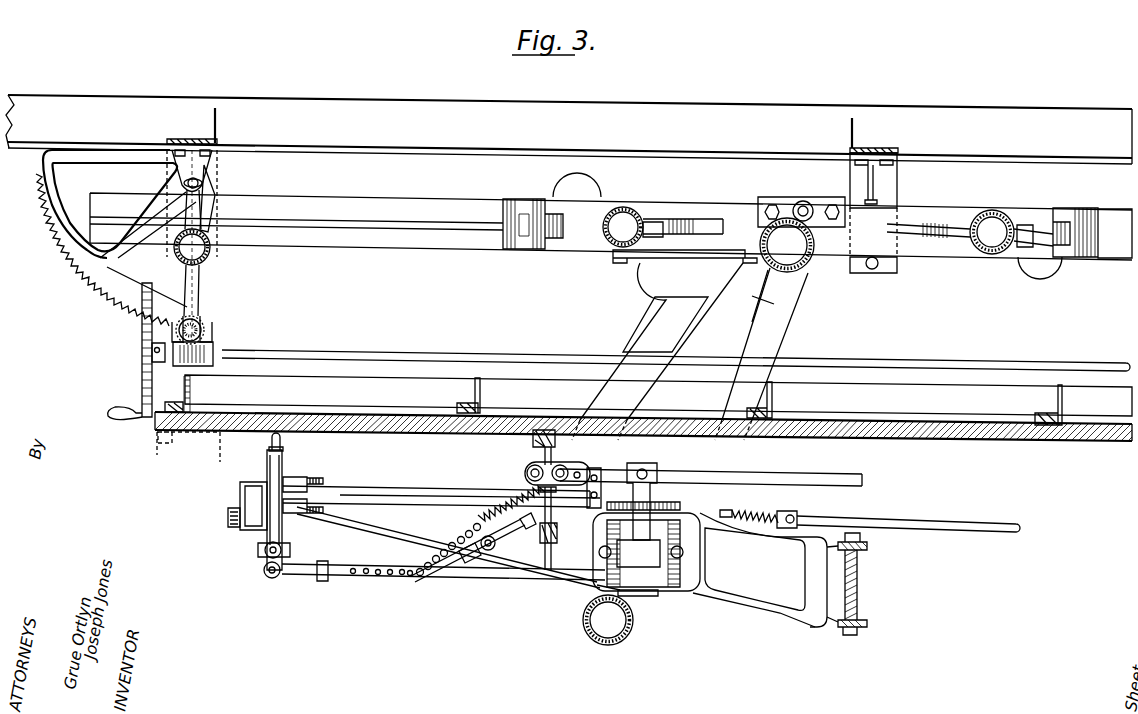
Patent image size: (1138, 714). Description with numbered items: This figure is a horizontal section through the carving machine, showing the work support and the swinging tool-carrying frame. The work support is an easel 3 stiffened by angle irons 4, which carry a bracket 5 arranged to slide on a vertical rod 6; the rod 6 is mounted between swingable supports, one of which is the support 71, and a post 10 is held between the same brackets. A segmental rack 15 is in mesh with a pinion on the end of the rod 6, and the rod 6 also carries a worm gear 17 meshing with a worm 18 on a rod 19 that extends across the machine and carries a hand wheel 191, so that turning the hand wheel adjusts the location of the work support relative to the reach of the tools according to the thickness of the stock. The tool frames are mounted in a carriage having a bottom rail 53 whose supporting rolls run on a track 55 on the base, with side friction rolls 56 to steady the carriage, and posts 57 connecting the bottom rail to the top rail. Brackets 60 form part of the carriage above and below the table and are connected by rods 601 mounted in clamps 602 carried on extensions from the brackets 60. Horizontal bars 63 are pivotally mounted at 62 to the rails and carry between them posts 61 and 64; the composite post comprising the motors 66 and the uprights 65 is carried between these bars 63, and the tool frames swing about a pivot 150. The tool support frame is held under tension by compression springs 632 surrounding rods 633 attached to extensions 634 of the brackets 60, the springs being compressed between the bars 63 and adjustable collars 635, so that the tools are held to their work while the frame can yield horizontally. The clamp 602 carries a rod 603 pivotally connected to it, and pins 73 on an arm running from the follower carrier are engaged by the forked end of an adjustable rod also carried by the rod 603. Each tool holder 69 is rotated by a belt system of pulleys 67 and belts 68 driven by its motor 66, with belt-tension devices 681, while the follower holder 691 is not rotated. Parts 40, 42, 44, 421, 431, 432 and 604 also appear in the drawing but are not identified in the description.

The easel 3 is at (922, 438).
The angle irons 4 is at (716, 112).
The bracket 5 is at (270, 440).
The vertical rods 6 is at (201, 323).
The posts 10 is at (208, 262).
The segmental racks 15 is at (118, 307).
The worm gears 17 is at (205, 328).
The worms 18 is at (203, 362).
The rods 19 is at (676, 352).
The hand wheel 191 is at (145, 374).
The spring 40 is at (480, 518).
The rod 42 is at (403, 527).
The rod 44 is at (453, 565).
The bottom rail 53 is at (940, 211).
The track 55 is at (437, 208).
The side friction rolls 56 is at (577, 192).
The posts 57 is at (628, 224).
The brackets 60 is at (646, 313).
The post 61 is at (793, 258).
The pivot 62 is at (804, 205).
The horizontal bars 63 is at (757, 333).
The post 64 is at (610, 632).
The uprights 65 is at (672, 588).
The motor 66 is at (613, 583).
The pulleys 67 is at (292, 480).
The belts 68 is at (402, 498).
The tool holders 69 is at (307, 513).
The swingable support 71 is at (647, 590).
The pins 73 is at (377, 578).
The pivot 150 is at (643, 590).
The end block 421 is at (859, 583).
The slide 431 is at (347, 578).
The chain 432 is at (450, 541).
The rods 601 is at (530, 468).
The clamps 602 is at (547, 464).
The rod 603 is at (773, 478).
The hanger 604 is at (643, 467).
The compression springs 632 is at (761, 512).
The rods 633 is at (823, 519).
The extension 634 is at (541, 540).
The adjustable collars 635 is at (788, 512).
The belt tension devices 681 is at (538, 530).
The follower holder 691 is at (268, 473).